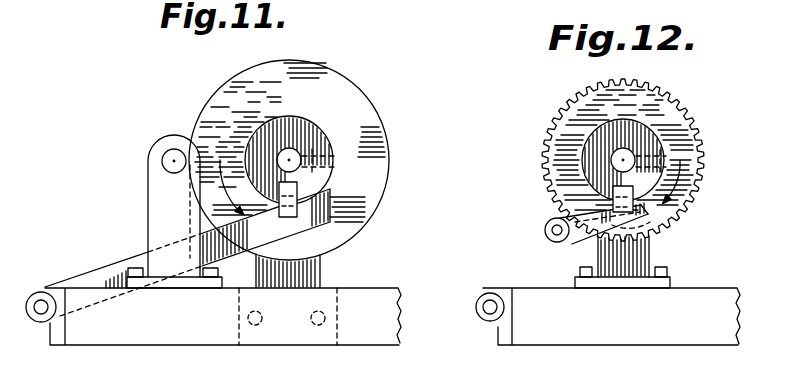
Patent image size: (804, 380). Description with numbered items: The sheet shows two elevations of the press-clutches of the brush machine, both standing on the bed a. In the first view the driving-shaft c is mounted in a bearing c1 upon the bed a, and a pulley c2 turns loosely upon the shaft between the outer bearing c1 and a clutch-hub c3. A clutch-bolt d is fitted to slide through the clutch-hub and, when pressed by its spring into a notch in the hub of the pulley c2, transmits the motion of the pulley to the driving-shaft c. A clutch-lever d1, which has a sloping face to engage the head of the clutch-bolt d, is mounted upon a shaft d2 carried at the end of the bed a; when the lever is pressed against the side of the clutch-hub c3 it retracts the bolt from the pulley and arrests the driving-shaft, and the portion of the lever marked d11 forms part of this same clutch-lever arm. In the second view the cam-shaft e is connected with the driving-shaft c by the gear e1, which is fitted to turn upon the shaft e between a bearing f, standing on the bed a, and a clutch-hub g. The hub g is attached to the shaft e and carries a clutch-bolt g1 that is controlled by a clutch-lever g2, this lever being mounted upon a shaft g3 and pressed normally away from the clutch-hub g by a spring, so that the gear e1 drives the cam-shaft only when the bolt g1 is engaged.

In FIG. 11, the bed a is at (223, 316).
In FIG. 12, the bed a is at (717, 298).
In FIG. 11, the driving-shaft c is at (284, 156).
In FIG. 11, the bearing c1 is at (322, 271).
In FIG. 11, the pulley c2 is at (391, 167).
In FIG. 11, the clutch-hub c3 is at (321, 134).
In FIG. 11, the clutch-bolt d is at (297, 188).
In FIG. 11, the clutch-lever d1 is at (315, 218).
In FIG. 11, the rod portion d11 is at (105, 239).
In FIG. 11, the shaft d2 is at (41, 302).
In FIG. 12, the shaft d2 is at (491, 303).
In FIG. 11, the cam-shaft e is at (172, 160).
In FIG. 12, the cam-shaft e is at (620, 158).
In FIG. 12, the gear e1 is at (704, 170).
In FIG. 11, the bearing f is at (148, 193).
In FIG. 12, the bearing f is at (649, 250).
In FIG. 12, the clutch-hub g is at (583, 166).
In FIG. 12, the clutch-bolt g1 is at (613, 187).
In FIG. 12, the clutch-lever g2 is at (649, 214).
In FIG. 12, the shaft g3 is at (545, 230).